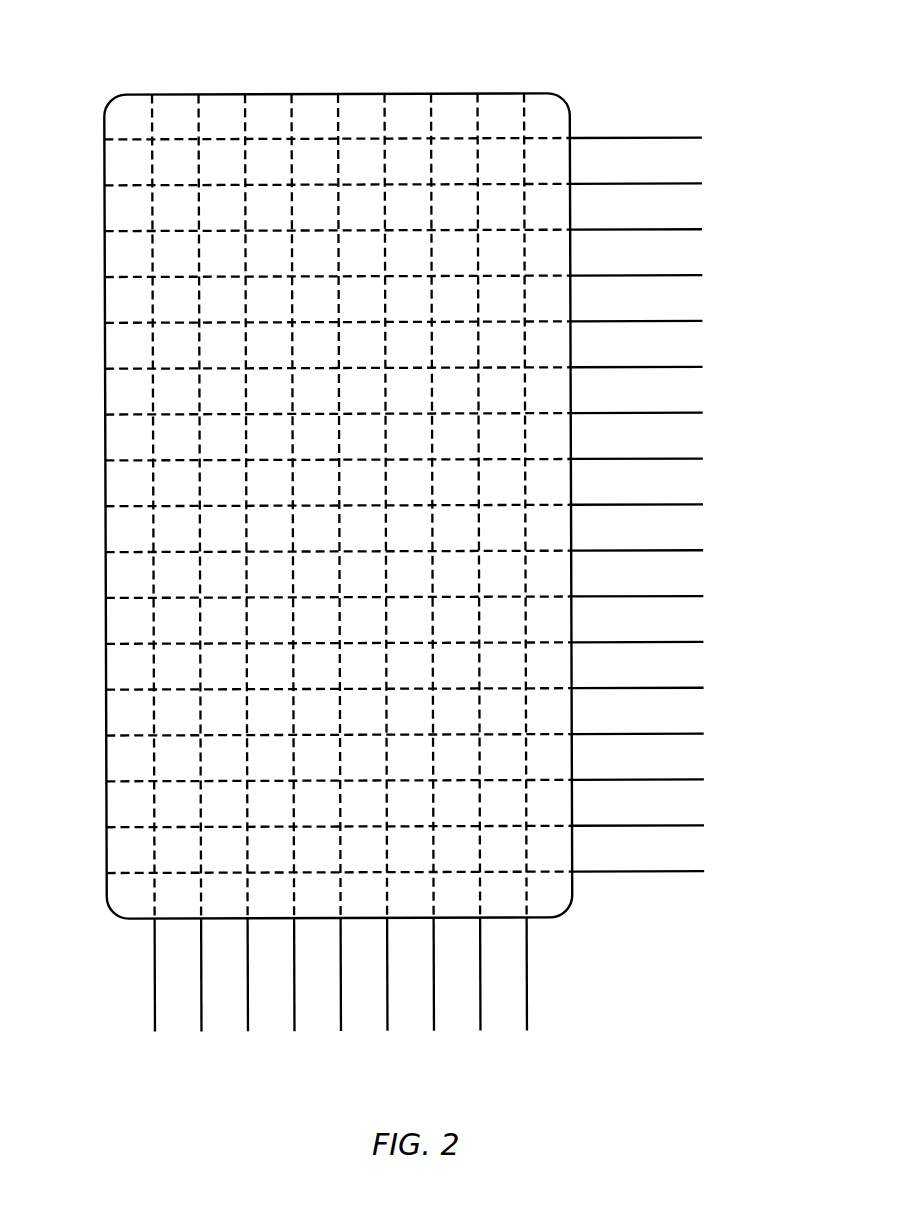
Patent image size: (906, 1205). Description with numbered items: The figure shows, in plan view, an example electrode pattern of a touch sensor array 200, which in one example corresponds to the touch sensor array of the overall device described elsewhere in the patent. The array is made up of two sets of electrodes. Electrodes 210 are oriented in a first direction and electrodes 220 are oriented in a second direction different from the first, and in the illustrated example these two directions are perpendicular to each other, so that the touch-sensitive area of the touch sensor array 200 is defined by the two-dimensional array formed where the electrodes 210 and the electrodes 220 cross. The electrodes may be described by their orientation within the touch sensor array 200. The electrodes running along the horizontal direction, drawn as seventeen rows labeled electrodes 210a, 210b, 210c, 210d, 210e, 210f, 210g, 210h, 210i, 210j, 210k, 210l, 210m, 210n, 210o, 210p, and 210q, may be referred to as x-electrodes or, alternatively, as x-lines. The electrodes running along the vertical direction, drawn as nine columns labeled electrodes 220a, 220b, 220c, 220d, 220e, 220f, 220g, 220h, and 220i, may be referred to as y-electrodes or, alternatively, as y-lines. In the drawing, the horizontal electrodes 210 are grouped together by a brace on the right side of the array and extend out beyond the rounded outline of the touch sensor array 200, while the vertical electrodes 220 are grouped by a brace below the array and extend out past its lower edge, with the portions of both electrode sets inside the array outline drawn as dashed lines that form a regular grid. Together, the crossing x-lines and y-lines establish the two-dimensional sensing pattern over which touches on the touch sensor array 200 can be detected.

The touch sensor array 200 is at (97, 33).
The electrodes 210 is at (451, 495).
The electrode 210a is at (635, 139).
The electrode 210b is at (635, 185).
The electrode 210c is at (635, 230).
The electrode 210d is at (635, 276).
The electrode 210e is at (635, 322).
The electrode 210f is at (635, 368).
The electrode 210g is at (635, 414).
The electrode 210h is at (635, 460).
The electrode 210i is at (635, 506).
The electrode 210j is at (635, 551).
The electrode 210k is at (635, 597).
The electrode 210l is at (635, 643).
The electrode 210m is at (635, 689).
The electrode 210n is at (635, 735).
The electrode 210o is at (635, 781).
The electrode 210p is at (635, 826).
The electrode 210q is at (407, 860).
The electrodes 220 is at (340, 604).
The electrode 220a is at (155, 574).
The electrode 220b is at (202, 573).
The electrode 220c is at (248, 573).
The electrode 220d is at (295, 573).
The electrode 220e is at (341, 573).
The electrode 220f is at (388, 573).
The electrode 220g is at (434, 573).
The electrode 220h is at (481, 572).
The electrode 220i is at (527, 572).